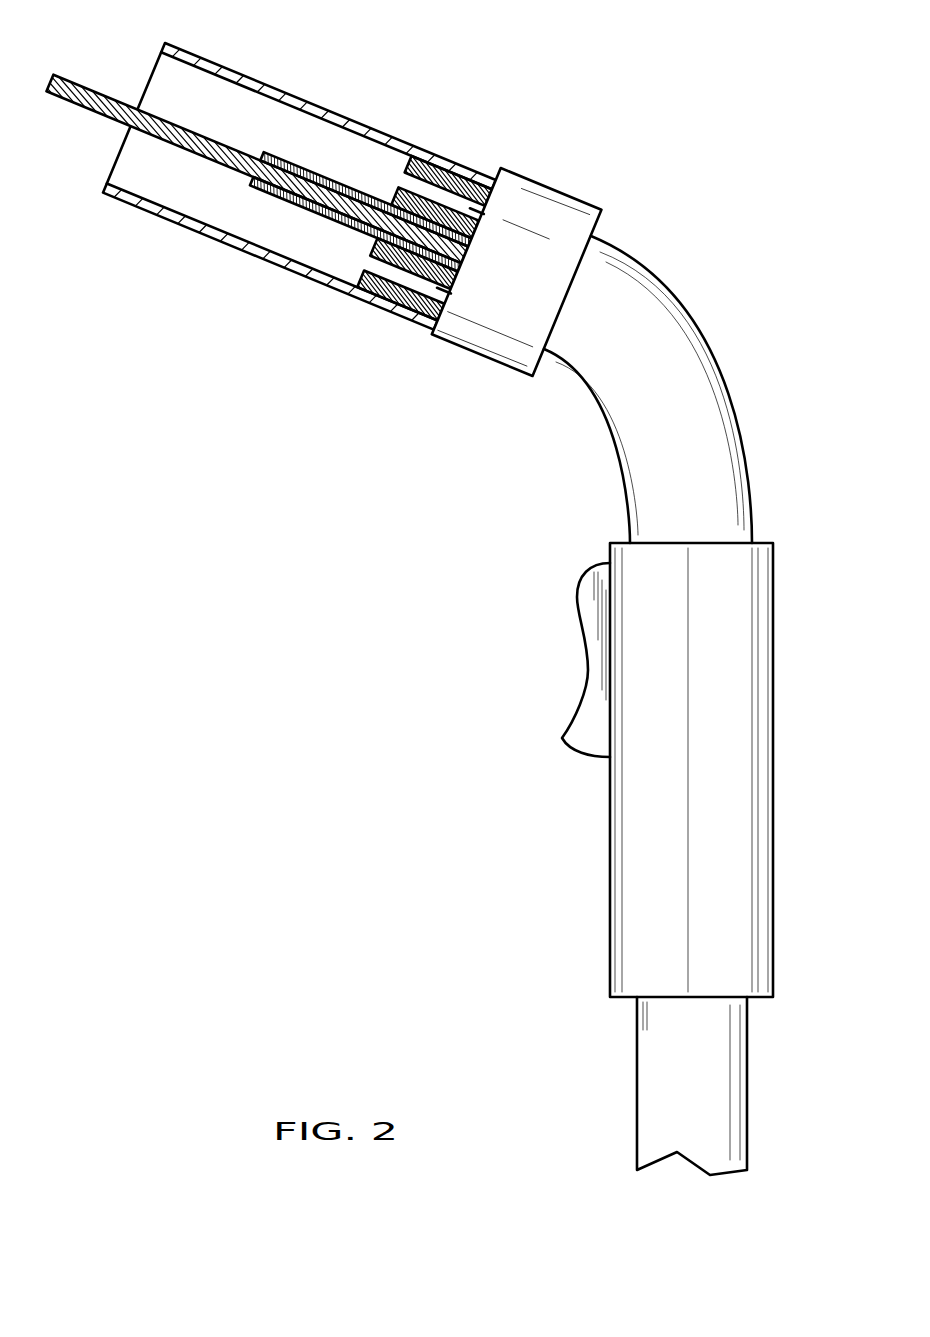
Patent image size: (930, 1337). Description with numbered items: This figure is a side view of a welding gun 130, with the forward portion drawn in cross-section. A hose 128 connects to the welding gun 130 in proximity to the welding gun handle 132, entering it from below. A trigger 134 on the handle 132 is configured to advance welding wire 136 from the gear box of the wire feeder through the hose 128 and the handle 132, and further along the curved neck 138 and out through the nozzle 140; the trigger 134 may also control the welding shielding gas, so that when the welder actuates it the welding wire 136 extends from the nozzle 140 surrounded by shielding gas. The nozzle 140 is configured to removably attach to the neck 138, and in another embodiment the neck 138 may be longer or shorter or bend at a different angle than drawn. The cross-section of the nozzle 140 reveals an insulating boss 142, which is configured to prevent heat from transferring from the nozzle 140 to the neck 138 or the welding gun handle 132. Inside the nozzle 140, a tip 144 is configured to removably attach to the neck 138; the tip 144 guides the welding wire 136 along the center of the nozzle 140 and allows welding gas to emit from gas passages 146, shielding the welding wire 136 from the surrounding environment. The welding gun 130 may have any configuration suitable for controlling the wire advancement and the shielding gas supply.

The hose 128 is at (652, 1090).
The welding gun 130 is at (668, 138).
The welding gun handle 132 is at (610, 858).
The trigger 134 is at (583, 714).
The welding wire 136 is at (108, 119).
The neck 138 is at (615, 467).
The nozzle 140 is at (284, 90).
The insulating boss 142 is at (516, 373).
The tip 144 is at (297, 199).
The gas passages 146 is at (438, 290).